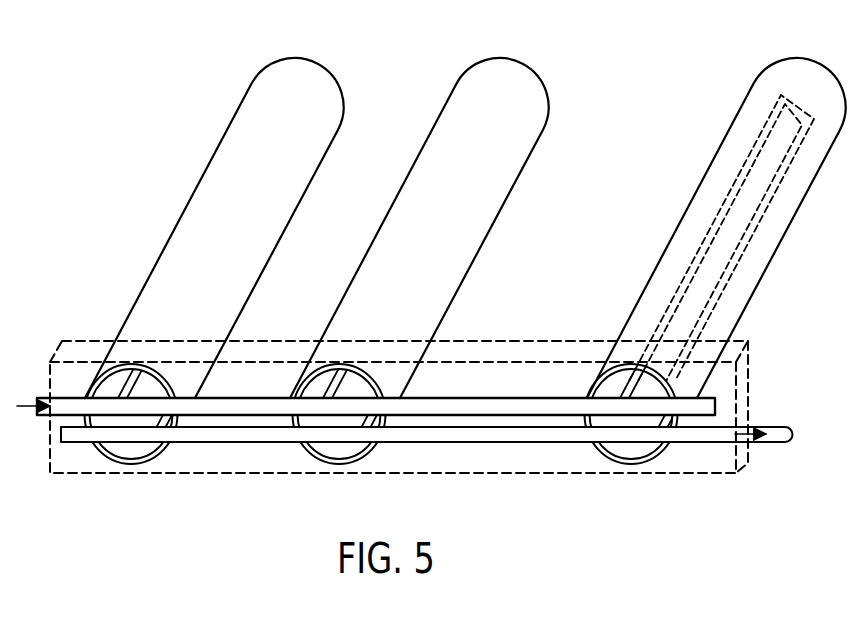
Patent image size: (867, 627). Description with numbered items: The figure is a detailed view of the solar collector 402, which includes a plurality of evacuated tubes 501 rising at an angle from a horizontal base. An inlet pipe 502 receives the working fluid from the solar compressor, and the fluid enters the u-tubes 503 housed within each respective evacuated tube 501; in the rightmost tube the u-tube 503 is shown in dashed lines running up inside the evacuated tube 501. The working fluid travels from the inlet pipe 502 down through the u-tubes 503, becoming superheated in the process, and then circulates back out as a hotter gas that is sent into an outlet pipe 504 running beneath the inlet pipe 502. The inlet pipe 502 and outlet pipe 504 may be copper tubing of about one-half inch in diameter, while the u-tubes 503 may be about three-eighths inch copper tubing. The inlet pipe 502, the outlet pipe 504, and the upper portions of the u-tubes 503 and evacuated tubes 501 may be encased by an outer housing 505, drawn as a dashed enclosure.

The solar collector 402 is at (429, 268).
The evacuated tubes 501 is at (198, 186).
The inlet pipe 502 is at (46, 398).
The u-tubes 503 is at (758, 133).
The outlet pipe 504 is at (690, 443).
The outer housing 505 is at (91, 339).